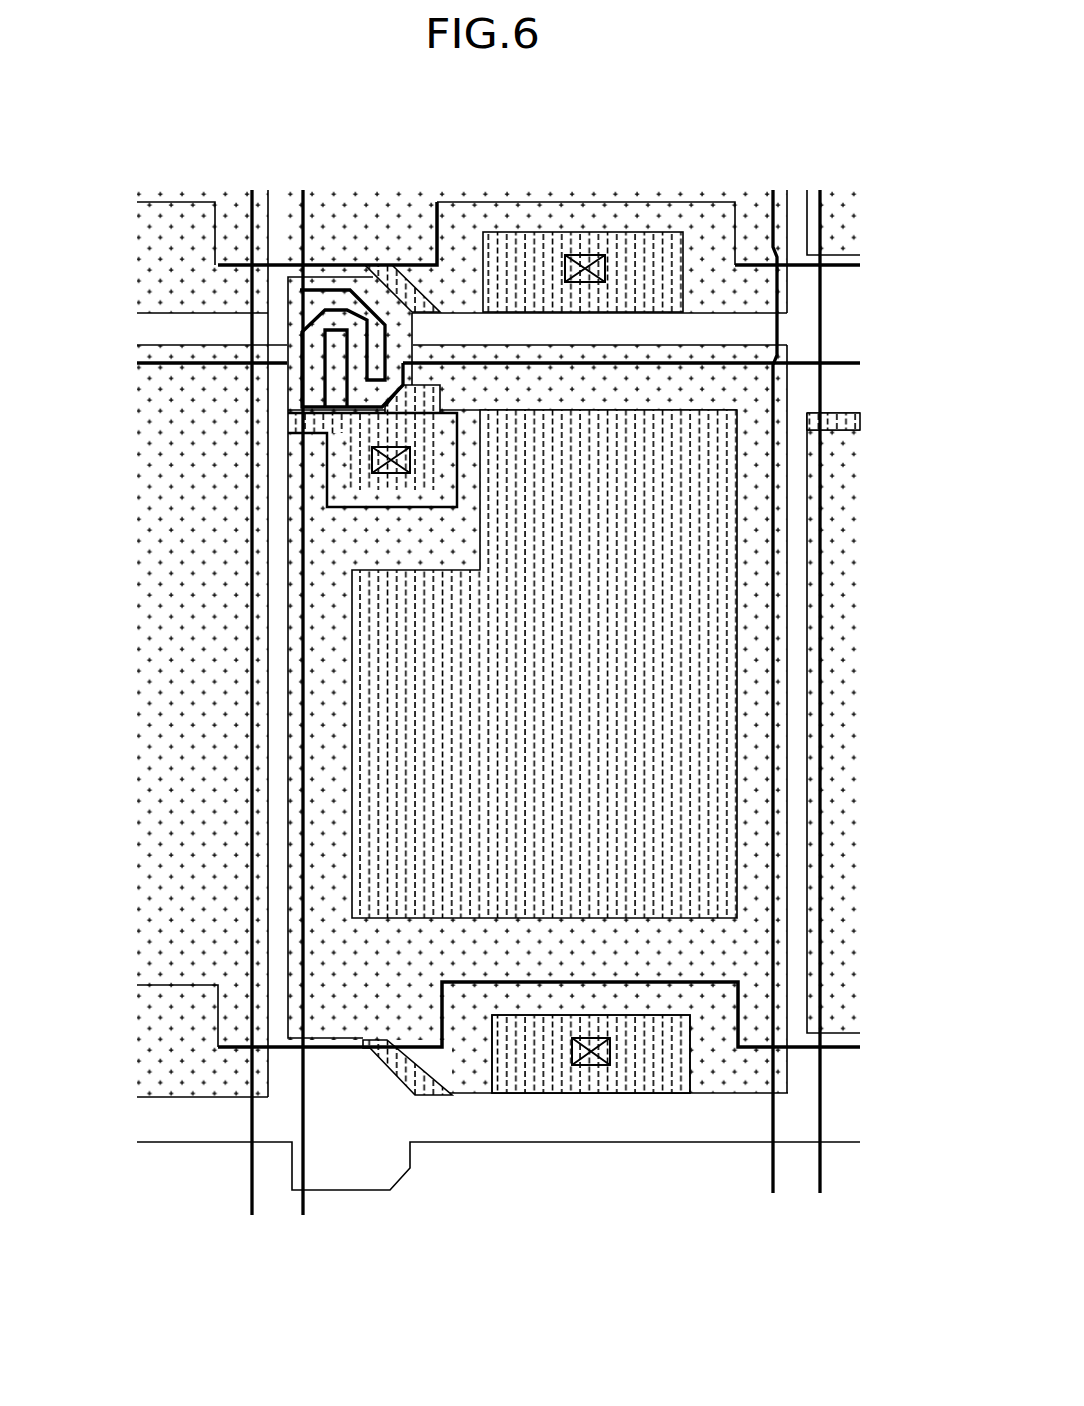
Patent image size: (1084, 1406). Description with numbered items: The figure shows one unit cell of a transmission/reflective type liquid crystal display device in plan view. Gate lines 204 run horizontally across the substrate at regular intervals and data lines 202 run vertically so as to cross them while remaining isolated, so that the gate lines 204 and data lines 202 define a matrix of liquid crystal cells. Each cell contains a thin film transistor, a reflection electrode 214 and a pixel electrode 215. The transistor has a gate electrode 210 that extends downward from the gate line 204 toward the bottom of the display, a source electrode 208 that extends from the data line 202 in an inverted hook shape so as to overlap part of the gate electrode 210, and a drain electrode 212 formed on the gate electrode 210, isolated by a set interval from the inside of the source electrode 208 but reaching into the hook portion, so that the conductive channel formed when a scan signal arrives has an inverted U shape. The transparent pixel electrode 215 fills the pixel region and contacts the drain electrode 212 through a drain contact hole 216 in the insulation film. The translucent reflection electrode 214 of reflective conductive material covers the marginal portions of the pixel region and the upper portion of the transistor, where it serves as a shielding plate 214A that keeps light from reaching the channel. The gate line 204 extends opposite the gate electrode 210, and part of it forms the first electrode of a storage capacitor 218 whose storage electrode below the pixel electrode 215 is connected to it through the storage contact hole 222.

The data line 202 is at (281, 1213).
The gate line 204 is at (848, 317).
The source electrode 208 is at (370, 318).
The gate electrode 210 is at (393, 387).
The drain electrode 212 is at (335, 350).
The reflection electrode 214 is at (840, 955).
The shielding plate 214A is at (287, 297).
The pixel electrode 215 is at (705, 777).
The drain contact hole 216 is at (378, 458).
The storage capacitor 218 is at (527, 1097).
The storage contact hole 222 is at (602, 1065).